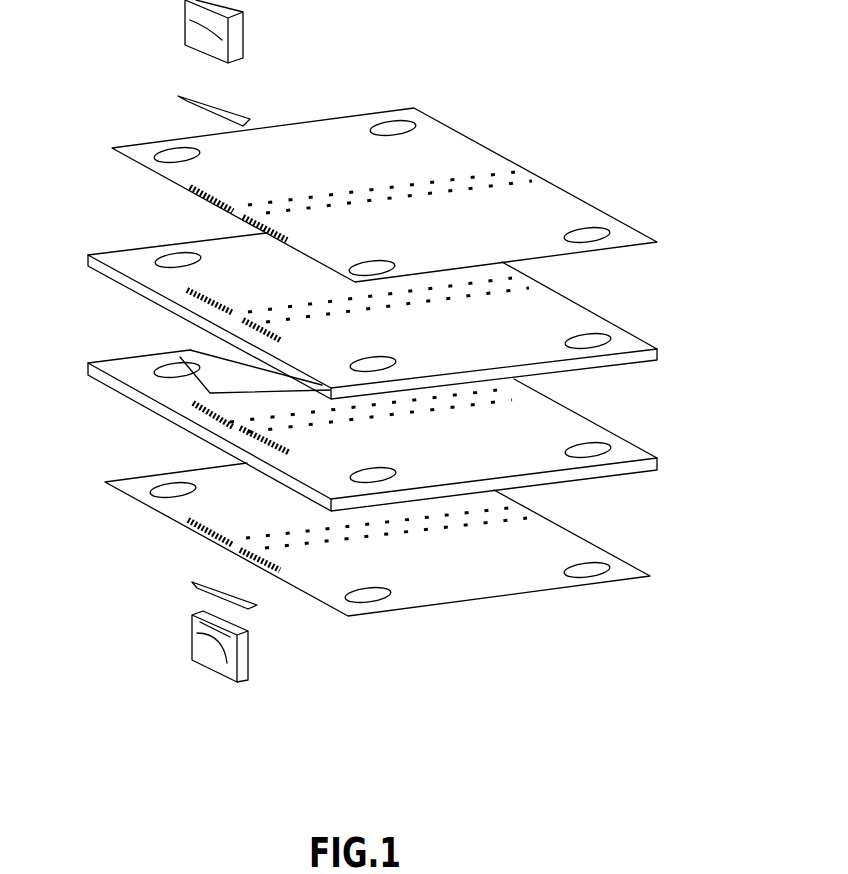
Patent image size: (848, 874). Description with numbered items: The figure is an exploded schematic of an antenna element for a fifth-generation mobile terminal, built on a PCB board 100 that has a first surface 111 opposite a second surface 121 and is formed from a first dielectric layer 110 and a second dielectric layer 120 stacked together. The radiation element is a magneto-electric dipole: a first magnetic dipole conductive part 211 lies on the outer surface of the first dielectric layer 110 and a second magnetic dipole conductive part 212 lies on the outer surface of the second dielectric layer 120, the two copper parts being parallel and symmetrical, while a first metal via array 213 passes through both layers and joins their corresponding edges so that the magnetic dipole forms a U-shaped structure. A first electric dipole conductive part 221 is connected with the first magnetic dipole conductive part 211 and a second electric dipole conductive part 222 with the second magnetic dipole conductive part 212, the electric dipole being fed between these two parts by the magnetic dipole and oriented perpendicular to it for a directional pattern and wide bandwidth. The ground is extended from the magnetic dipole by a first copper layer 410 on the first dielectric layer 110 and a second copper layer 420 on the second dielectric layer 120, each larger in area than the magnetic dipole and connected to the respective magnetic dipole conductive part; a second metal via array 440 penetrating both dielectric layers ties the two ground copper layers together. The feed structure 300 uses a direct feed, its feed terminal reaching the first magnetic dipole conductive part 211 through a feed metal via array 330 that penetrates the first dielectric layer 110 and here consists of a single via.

The PCB board 100 is at (429, 396).
The first dielectric layer 110 is at (415, 454).
The first surface 111 is at (578, 485).
The second dielectric layer 120 is at (421, 327).
The second surface 121 is at (613, 345).
The first magnetic dipole conductive part 211 is at (242, 598).
The second magnetic dipole conductive part 212 is at (190, 100).
The first metal via array 213 is at (205, 303).
The first electric dipole conductive part 221 is at (192, 630).
The second electric dipole conductive part 222 is at (186, 17).
The feed structure 300 is at (180, 357).
The feed metal via array 330 is at (187, 420).
The first copper layer 410 is at (420, 590).
The second copper layer 420 is at (420, 152).
The second metal via array 440 is at (528, 290).